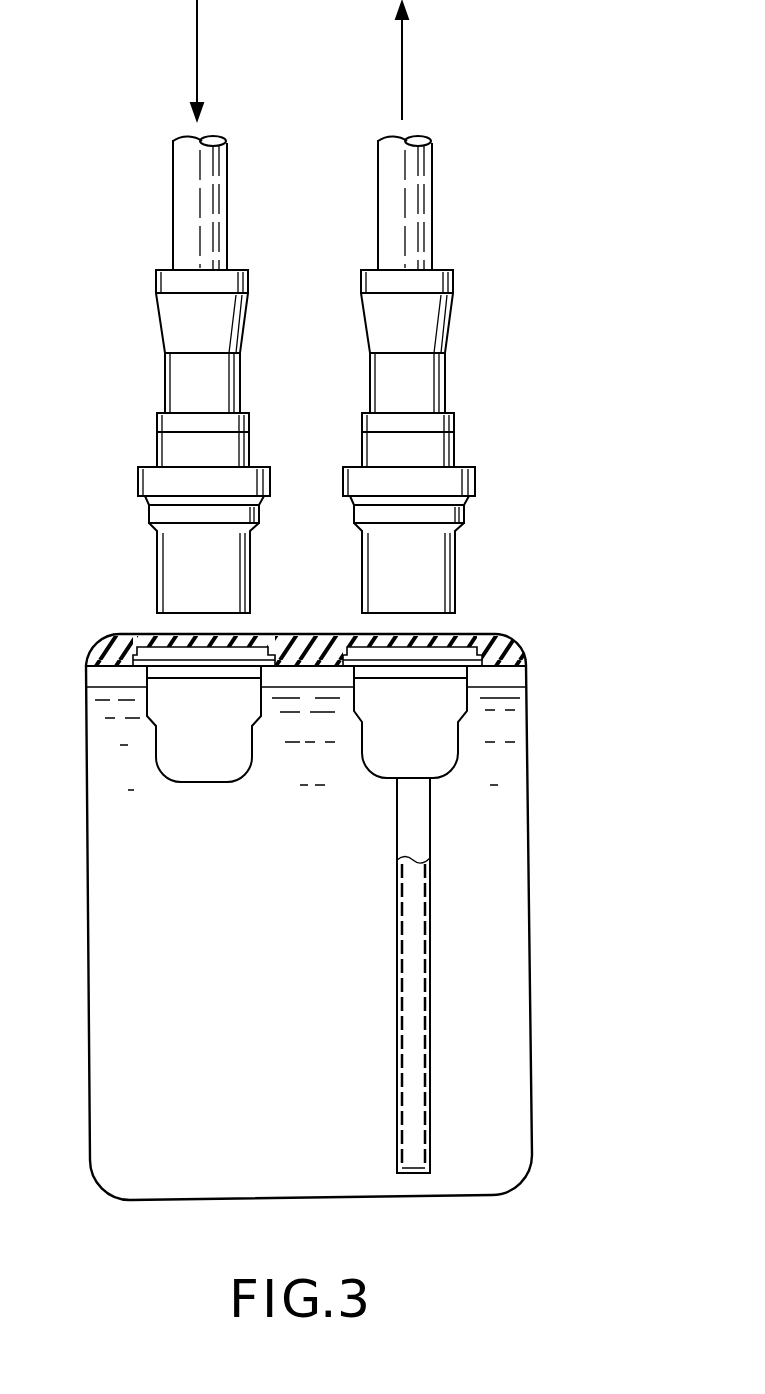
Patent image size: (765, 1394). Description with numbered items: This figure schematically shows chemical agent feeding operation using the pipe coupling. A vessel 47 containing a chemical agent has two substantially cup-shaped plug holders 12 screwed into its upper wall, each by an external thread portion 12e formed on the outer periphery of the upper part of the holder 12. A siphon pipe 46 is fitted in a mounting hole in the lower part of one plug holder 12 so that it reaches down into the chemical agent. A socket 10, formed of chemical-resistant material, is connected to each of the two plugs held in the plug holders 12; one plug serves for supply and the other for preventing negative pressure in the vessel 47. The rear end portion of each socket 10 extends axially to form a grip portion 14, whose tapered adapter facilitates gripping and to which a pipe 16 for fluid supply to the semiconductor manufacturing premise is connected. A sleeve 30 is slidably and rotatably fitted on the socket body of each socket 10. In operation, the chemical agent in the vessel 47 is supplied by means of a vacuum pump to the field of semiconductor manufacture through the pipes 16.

The socket 10 is at (150, 417).
The plug holder 12 is at (165, 748).
The external thread portion 12e is at (140, 656).
The grip portion 14 is at (175, 315).
The pipe 16 is at (190, 185).
The sleeve 30 is at (160, 512).
The siphon pipe 46 is at (431, 922).
The vessel 47 is at (531, 1016).